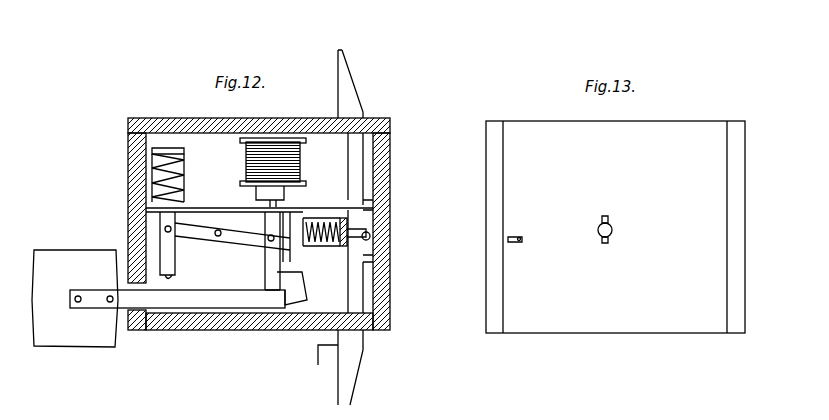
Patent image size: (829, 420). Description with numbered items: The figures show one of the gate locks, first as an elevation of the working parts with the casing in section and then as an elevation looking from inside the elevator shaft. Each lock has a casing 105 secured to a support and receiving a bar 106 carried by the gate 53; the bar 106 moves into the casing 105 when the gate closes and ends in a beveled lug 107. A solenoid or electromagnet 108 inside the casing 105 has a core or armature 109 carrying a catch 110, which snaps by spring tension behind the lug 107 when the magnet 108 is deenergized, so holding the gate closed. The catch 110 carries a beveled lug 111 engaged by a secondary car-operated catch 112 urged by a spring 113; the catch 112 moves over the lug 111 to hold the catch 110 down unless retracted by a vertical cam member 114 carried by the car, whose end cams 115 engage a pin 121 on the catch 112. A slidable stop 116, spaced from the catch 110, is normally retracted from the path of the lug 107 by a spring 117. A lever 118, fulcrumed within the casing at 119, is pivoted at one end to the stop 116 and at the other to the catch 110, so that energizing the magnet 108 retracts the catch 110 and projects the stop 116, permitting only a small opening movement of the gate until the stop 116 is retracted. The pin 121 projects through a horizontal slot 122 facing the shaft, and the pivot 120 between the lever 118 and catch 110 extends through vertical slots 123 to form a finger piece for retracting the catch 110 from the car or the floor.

In FIG. 12, the gate 53 is at (50, 254).
In FIG. 12, the casing 105 is at (386, 197).
In FIG. 13, the casing 105 is at (672, 130).
In FIG. 12, the bar 106 is at (182, 312).
In FIG. 12, the beveled lug 107 is at (294, 305).
In FIG. 12, the solenoid or electromagnet 108 is at (258, 148).
In FIG. 12, the core or armature 109 is at (286, 194).
In FIG. 12, the catch 110 is at (262, 308).
In FIG. 12, the beveled lug 111 is at (281, 252).
In FIG. 12, the secondary car-operated catch 112 is at (385, 228).
In FIG. 12, the spring 113 is at (333, 216).
In FIG. 12, the vertical cam member 114 is at (358, 160).
In FIG. 12, the cams 115 is at (355, 100).
In FIG. 12, the slidable stop 116 is at (165, 239).
In FIG. 12, the spring 117 is at (150, 174).
In FIG. 12, the lever 118 is at (150, 212).
In FIG. 12, the fulcrum 119 is at (218, 229).
In FIG. 12, the pivot 120 is at (268, 242).
In FIG. 13, the pivot 120 is at (613, 228).
In FIG. 12, the pin 121 is at (369, 240).
In FIG. 13, the pin 121 is at (520, 238).
In FIG. 13, the horizontal slot 122 is at (515, 243).
In FIG. 13, the vertical slots 123 is at (608, 242).